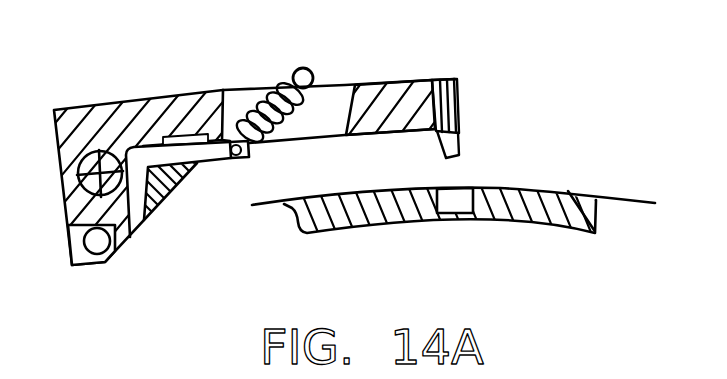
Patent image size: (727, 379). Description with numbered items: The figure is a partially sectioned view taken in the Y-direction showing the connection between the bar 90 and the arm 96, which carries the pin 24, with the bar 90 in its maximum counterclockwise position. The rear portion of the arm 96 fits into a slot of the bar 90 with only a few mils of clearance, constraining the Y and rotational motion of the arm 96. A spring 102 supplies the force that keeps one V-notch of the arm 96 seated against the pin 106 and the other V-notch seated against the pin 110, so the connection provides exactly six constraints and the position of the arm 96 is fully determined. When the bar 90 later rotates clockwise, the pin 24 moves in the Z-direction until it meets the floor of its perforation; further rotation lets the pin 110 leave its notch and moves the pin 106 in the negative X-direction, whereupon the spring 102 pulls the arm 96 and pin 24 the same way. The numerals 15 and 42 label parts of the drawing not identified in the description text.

The rail 15 is at (620, 198).
The pin 24 is at (460, 150).
The rail body section 42 is at (563, 232).
The bar 90 is at (160, 216).
The arm 96 is at (386, 97).
The spring 102 is at (262, 88).
The pin 106 is at (83, 268).
The pin 110 is at (209, 163).